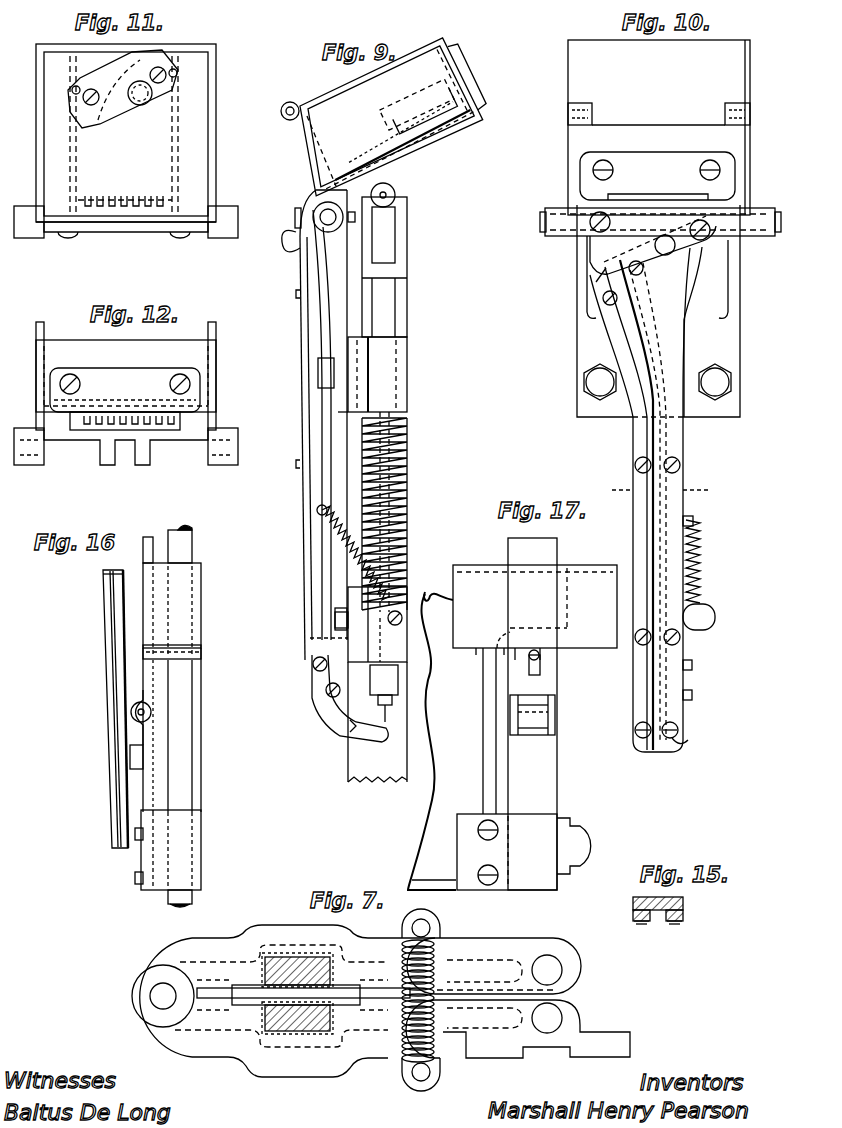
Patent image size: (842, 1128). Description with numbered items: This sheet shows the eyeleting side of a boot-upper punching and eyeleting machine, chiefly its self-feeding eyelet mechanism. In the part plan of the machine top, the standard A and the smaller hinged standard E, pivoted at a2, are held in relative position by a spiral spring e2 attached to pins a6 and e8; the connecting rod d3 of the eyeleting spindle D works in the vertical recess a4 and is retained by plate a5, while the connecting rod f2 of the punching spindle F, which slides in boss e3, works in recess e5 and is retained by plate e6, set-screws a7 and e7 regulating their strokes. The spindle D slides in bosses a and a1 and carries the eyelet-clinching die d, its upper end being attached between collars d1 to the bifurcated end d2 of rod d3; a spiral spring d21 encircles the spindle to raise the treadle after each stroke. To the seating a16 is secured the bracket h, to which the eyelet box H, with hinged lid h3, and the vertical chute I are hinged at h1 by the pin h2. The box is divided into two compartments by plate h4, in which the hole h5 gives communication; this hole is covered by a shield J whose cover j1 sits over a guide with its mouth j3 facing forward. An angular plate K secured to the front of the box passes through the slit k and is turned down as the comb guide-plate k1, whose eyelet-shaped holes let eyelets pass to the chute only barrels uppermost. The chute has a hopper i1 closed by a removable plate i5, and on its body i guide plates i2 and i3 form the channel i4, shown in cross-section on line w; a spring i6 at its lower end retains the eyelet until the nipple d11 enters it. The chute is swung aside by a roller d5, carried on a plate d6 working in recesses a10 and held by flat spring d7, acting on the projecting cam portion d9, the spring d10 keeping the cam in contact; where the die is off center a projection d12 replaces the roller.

In FIG. 11, the box H is at (216, 156).
In FIG. 12, the box H is at (126, 393).
In FIG. 9, the box H is at (446, 28).
In FIG. 10, the box H is at (653, 140).
In FIG. 11, the angular plate K is at (120, 228).
In FIG. 12, the angular plate K is at (125, 390).
In FIG. 9, the angular plate K is at (294, 180).
In FIG. 10, the angular plate K is at (657, 176).
In FIG. 11, the slit or opening k is at (105, 192).
In FIG. 12, the slit or opening k is at (168, 428).
In FIG. 9, the slit or opening k is at (385, 165).
In FIG. 12, the guide plate or comb k1 is at (88, 428).
In FIG. 9, the guide plate or comb k1 is at (420, 182).
In FIG. 11, the shield J is at (123, 89).
In FIG. 9, the shield J is at (470, 100).
In FIG. 11, the cover j1 is at (140, 122).
In FIG. 9, the cover j1 is at (428, 86).
In FIG. 11, the mouth j3 is at (100, 118).
In FIG. 9, the bracket h is at (321, 425).
In FIG. 10, the bracket h is at (577, 272).
In FIG. 9, the hinge h1 is at (316, 210).
In FIG. 10, the hinge h1 is at (762, 196).
In FIG. 9, the pin h2 is at (322, 217).
In FIG. 10, the pin h2 is at (786, 216).
In FIG. 10, the hinged lid h3 is at (719, 62).
In FIG. 11, the plate h4 is at (121, 162).
In FIG. 12, the plate h4 is at (188, 398).
In FIG. 9, the plate h4 is at (350, 168).
In FIG. 11, the hole h5 is at (150, 93).
In FIG. 9, the chute I is at (320, 325).
In FIG. 10, the chute I is at (683, 442).
In FIG. 16, the chute I is at (117, 658).
In FIG. 9, the body of chute i is at (322, 432).
In FIG. 16, the body of chute i is at (116, 602).
In FIG. 15, the body of chute i is at (683, 903).
In FIG. 10, the hopper i1 is at (648, 250).
In FIG. 10, the guiding plate i2 is at (618, 705).
In FIG. 15, the guiding plate i2 is at (633, 906).
In FIG. 9, the guiding plate i3 is at (302, 606).
In FIG. 10, the guiding plate i3 is at (683, 512).
In FIG. 16, the guiding plate i3 is at (112, 683).
In FIG. 15, the guiding plate i3 is at (683, 916).
In FIG. 10, the channel i4 is at (650, 768).
In FIG. 15, the channel i4 is at (660, 918).
In FIG. 9, the removable plate or covering i5 is at (298, 250).
In FIG. 10, the removable plate or covering i5 is at (653, 258).
In FIG. 9, the spring i6 is at (340, 708).
In FIG. 10, the spring i6 is at (678, 742).
In FIG. 10, the section line w is at (660, 489).
In FIG. 9, the spindle D is at (398, 308).
In FIG. 16, the spindle D is at (180, 716).
In FIG. 7, the spindle D is at (547, 1020).
In FIG. 9, the eyelet-clinching die d is at (392, 702).
In FIG. 9, the collars d1 is at (407, 205).
In FIG. 9, the bifurcated end d2 is at (407, 236).
In FIG. 7, the connecting rod or lever d3 is at (300, 1032).
In FIG. 16, the roller d5 is at (130, 718).
In FIG. 17, the roller d5 is at (528, 735).
In FIG. 16, the plate d6 is at (150, 534).
In FIG. 17, the plate d6 is at (532, 714).
In FIG. 16, the flat spring d7 is at (140, 858).
In FIG. 17, the flat spring d7 is at (545, 832).
In FIG. 16, the projecting portion of cam d9 is at (172, 748).
In FIG. 9, the spring d10 is at (345, 540).
In FIG. 10, the spring d10 is at (700, 563).
In FIG. 9, the nipple d11 is at (387, 714).
In FIG. 9, the projection d12 is at (356, 730).
In FIG. 9, the spiral spring d21 is at (407, 470).
In FIG. 9, the standard A is at (377, 722).
In FIG. 16, the standard A is at (201, 752).
In FIG. 7, the standard A is at (264, 1004).
In FIG. 9, the boss a is at (407, 380).
In FIG. 16, the boss a is at (201, 610).
In FIG. 17, the boss a is at (600, 616).
In FIG. 7, the boss a is at (585, 1008).
In FIG. 9, the boss a1 is at (407, 605).
In FIG. 16, the boss a1 is at (201, 845).
In FIG. 17, the boss a1 is at (557, 812).
In FIG. 7, the hinge a2 is at (150, 996).
In FIG. 7, the vertical recess a4 is at (276, 1032).
In FIG. 7, the plate a5 is at (245, 1004).
In FIG. 7, the pin a6 is at (420, 1075).
In FIG. 7, the set-screw a7 is at (430, 1020).
In FIG. 7, the recesses a10 is at (565, 1062).
In FIG. 9, the seating or projection a16 is at (348, 396).
In FIG. 10, the seating or projection a16 is at (603, 662).
In FIG. 17, the seating or projection a16 is at (585, 664).
In FIG. 7, the seating or projection a16 is at (608, 1057).
In FIG. 7, the second standard or framing E is at (392, 966).
In FIG. 7, the spiral spring e2 is at (490, 935).
In FIG. 7, the boss e3 is at (581, 970).
In FIG. 7, the vertical recess e5 is at (295, 957).
In FIG. 7, the plate e6 is at (335, 991).
In FIG. 7, the set-screw e7 is at (428, 968).
In FIG. 7, the pin e8 is at (426, 926).
In FIG. 7, the spindle F is at (550, 970).
In FIG. 7, the connecting rod or lever f2 is at (275, 960).